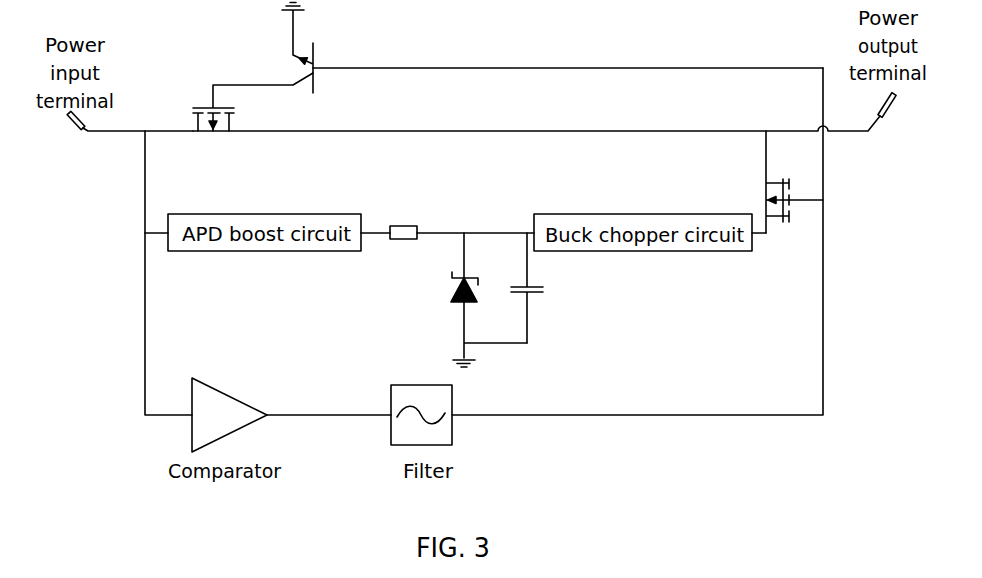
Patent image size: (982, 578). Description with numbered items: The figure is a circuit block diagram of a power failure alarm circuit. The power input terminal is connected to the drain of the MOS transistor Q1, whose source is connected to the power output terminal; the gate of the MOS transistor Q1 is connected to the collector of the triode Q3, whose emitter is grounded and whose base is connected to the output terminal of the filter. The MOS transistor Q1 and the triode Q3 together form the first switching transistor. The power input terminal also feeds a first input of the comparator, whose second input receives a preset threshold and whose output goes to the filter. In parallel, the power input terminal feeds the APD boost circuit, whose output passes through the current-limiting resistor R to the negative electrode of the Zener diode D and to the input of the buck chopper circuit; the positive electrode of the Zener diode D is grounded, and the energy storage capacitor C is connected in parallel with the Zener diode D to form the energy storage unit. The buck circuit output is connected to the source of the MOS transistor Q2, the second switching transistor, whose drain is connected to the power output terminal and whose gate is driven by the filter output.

The MOS transistor Q1 is at (253, 120).
The MOS transistor Q2 is at (794, 189).
The triode Q3 is at (320, 48).
The current-limiting resistor R is at (403, 248).
The Zener diode D is at (477, 300).
The energy storage capacitor C is at (534, 288).